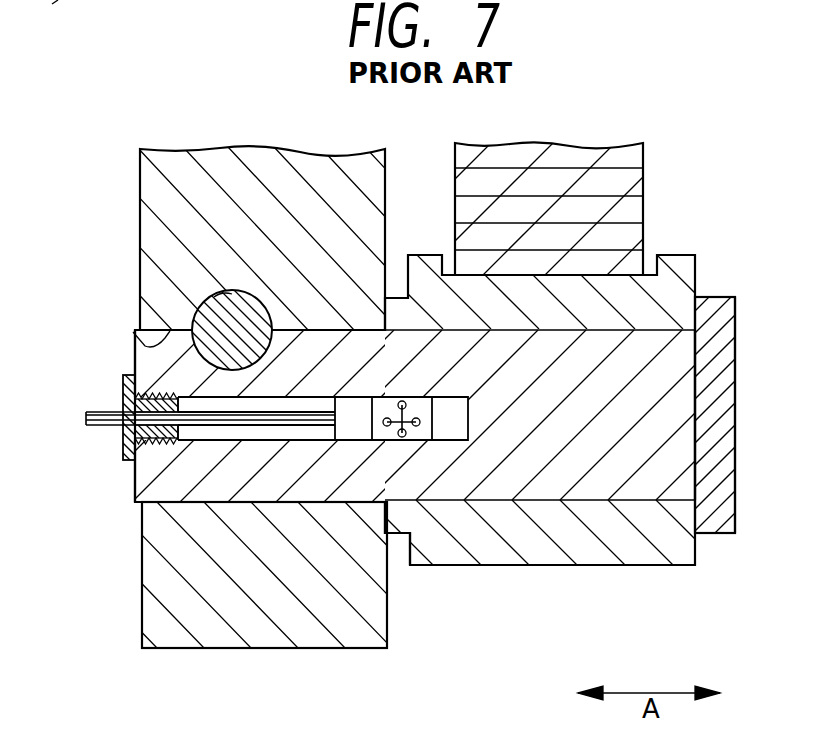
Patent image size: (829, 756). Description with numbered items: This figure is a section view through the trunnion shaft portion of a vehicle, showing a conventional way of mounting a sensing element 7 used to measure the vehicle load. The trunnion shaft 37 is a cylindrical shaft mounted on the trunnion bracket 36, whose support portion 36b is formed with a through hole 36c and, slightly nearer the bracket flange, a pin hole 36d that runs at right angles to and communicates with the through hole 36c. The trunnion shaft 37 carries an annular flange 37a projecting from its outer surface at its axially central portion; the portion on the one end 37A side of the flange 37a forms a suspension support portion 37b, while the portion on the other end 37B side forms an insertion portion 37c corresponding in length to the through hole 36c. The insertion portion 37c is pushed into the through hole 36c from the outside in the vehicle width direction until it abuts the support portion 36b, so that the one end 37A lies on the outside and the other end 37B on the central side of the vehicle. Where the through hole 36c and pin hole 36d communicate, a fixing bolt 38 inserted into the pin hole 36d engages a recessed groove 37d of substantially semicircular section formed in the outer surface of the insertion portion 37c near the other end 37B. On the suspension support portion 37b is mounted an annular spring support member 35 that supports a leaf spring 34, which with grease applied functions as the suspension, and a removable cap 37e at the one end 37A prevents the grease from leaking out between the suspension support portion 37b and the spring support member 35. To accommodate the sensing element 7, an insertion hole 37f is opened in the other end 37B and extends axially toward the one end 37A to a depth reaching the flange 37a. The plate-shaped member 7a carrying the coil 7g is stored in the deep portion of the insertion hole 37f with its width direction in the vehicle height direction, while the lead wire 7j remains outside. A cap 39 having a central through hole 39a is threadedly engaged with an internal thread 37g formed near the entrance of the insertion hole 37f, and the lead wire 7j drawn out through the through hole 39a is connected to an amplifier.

The sensing element 7 is at (343, 463).
The plate-shaped member 7a is at (427, 432).
The coil 7g is at (414, 463).
The lead wire 7j is at (283, 423).
The leaf spring 34 is at (632, 237).
The spring support member 35 is at (637, 567).
The trunnion bracket 36 is at (304, 140).
The support portion 36b is at (157, 562).
The through hole 36c is at (137, 333).
The pin hole 36d is at (212, 293).
The trunnion shaft 37 is at (545, 515).
The one end of trunnion shaft 37A is at (695, 398).
The other end of trunnion shaft 37B is at (125, 376).
The annular flange 37a is at (398, 535).
The suspension support portion 37b is at (677, 450).
The insertion portion 37c is at (150, 492).
The recessed groove 37d is at (307, 330).
The cap 37e is at (727, 358).
The insertion hole 37f is at (220, 437).
The internal thread 37g is at (163, 392).
The fixing bolt 38 is at (212, 308).
The cap 39 is at (127, 448).
The through hole 39a is at (124, 418).